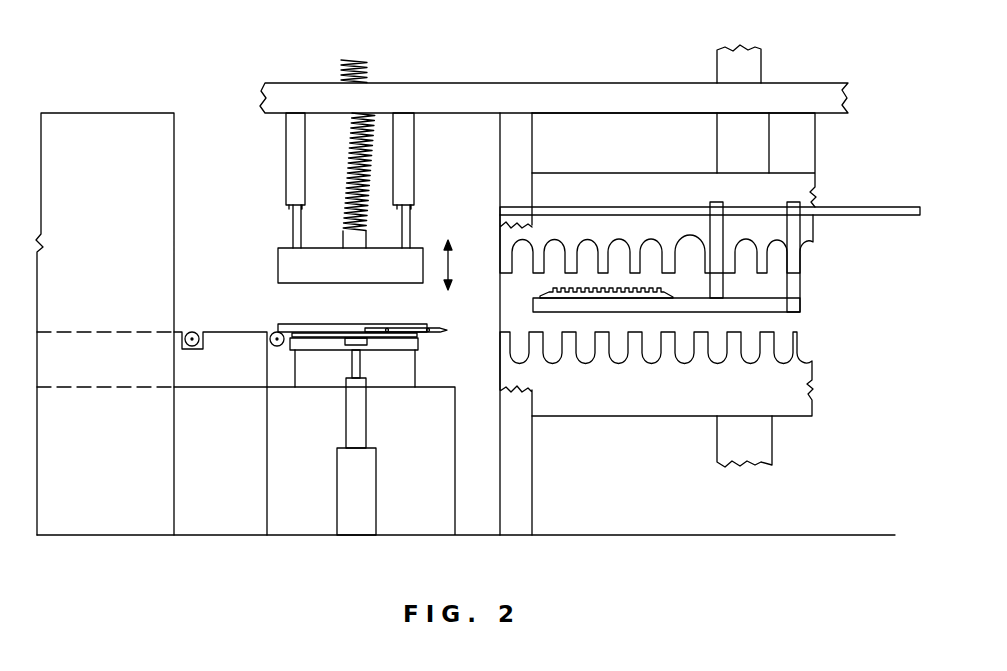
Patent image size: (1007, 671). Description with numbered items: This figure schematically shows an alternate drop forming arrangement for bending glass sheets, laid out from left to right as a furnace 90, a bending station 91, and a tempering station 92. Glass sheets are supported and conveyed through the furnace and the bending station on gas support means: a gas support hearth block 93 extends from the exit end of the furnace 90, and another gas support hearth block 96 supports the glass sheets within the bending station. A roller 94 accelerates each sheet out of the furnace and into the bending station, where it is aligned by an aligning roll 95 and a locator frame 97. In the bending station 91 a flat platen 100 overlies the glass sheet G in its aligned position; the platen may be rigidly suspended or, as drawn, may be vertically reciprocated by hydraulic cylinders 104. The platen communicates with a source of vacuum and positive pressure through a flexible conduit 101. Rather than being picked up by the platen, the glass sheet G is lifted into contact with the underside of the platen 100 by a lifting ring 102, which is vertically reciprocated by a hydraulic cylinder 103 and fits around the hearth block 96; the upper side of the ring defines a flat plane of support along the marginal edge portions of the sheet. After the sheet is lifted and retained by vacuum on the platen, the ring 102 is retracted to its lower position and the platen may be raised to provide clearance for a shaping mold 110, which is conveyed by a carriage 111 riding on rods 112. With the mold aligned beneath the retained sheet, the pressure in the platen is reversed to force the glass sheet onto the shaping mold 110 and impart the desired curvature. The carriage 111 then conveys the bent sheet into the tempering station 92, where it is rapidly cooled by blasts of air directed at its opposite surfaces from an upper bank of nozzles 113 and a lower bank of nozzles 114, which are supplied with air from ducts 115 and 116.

The furnace 90 is at (128, 113).
The bending station 91 is at (384, 55).
The tempering station 92 is at (655, 73).
The gas support hearth block 93 is at (263, 332).
The roller 94 is at (194, 332).
The aligning roll 95 is at (273, 331).
The gas support hearth block 96 is at (417, 372).
The locator frame 97 is at (447, 330).
The glass sheet G is at (318, 324).
The flat platen 100 is at (388, 283).
The flexible conduit 101 is at (352, 145).
The lifting ring 102 is at (305, 350).
The hydraulic cylinder 103 is at (366, 413).
The hydraulic cylinders 104 is at (286, 160).
The shaping mold 110 is at (540, 292).
The carriage 111 is at (785, 310).
The rods 112 is at (855, 215).
The upper bank of nozzles 113 is at (505, 250).
The lower bank of nozzles 114 is at (812, 341).
The duct 115 is at (770, 145).
The duct 116 is at (766, 437).